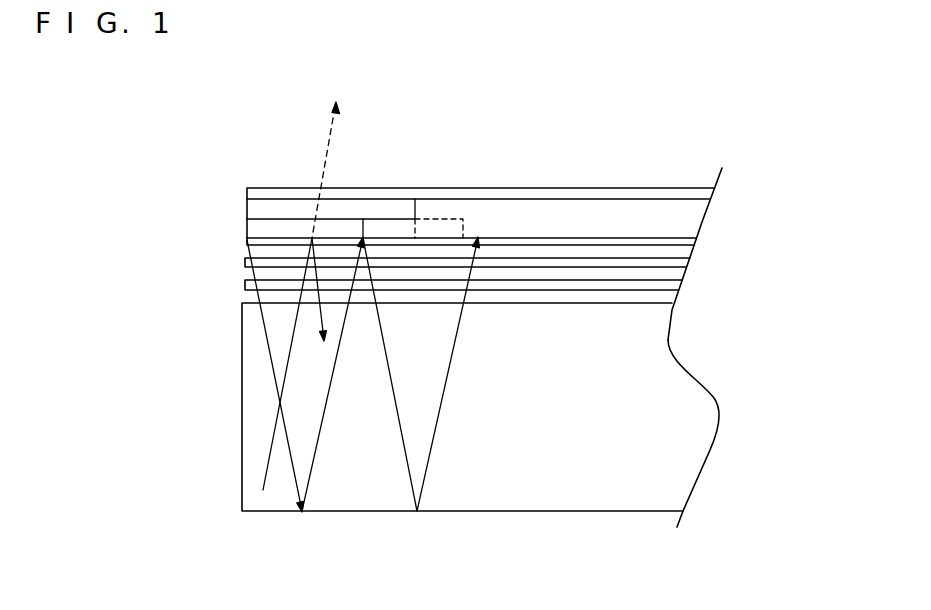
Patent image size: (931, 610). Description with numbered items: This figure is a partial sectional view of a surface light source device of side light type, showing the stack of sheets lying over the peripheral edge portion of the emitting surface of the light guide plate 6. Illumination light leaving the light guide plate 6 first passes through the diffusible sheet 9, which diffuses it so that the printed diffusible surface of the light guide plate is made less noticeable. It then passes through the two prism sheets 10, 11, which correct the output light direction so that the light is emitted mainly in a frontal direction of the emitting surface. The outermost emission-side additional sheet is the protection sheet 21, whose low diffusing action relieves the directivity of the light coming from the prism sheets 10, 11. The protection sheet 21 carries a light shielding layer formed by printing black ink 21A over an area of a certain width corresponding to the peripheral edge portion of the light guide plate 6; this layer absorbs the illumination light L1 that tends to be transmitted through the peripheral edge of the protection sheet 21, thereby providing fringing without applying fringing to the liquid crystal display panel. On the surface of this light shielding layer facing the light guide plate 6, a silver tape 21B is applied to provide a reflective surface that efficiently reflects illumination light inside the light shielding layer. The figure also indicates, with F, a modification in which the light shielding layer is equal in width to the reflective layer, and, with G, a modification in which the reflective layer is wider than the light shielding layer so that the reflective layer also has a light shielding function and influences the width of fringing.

The protection sheet 21 is at (532, 195).
The black ink 21A is at (277, 213).
The silver tape 21B is at (338, 228).
The equal-width reflective layer configuration F is at (424, 227).
The wider reflective layer configuration G is at (470, 229).
The illumination light L1 is at (322, 163).
The prism sheet 11 is at (675, 244).
The prism sheet 10 is at (680, 268).
The diffusible sheet 9 is at (662, 302).
The light guide plate 6 is at (680, 454).